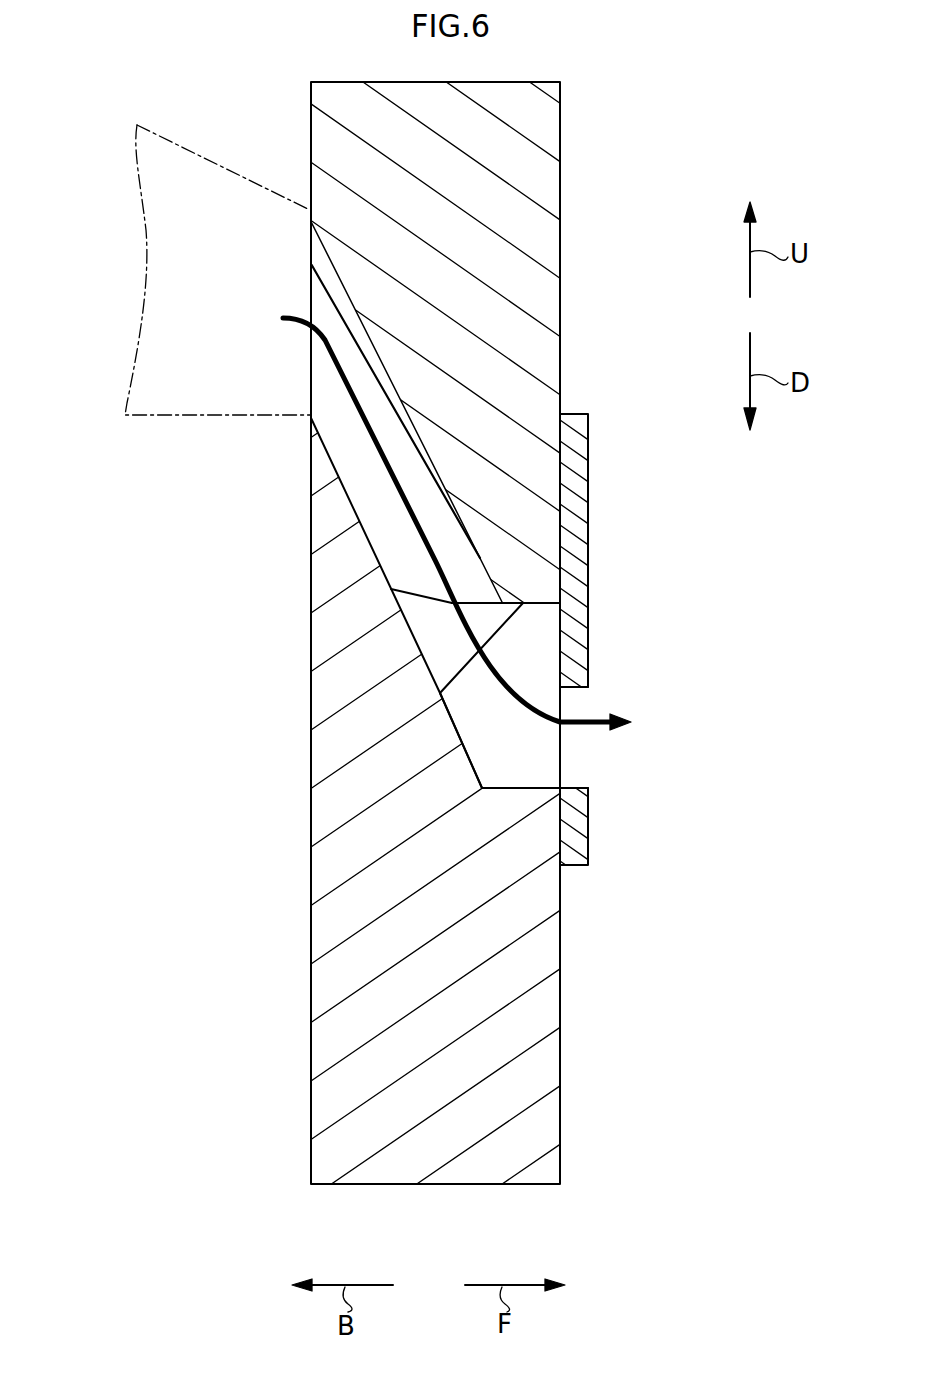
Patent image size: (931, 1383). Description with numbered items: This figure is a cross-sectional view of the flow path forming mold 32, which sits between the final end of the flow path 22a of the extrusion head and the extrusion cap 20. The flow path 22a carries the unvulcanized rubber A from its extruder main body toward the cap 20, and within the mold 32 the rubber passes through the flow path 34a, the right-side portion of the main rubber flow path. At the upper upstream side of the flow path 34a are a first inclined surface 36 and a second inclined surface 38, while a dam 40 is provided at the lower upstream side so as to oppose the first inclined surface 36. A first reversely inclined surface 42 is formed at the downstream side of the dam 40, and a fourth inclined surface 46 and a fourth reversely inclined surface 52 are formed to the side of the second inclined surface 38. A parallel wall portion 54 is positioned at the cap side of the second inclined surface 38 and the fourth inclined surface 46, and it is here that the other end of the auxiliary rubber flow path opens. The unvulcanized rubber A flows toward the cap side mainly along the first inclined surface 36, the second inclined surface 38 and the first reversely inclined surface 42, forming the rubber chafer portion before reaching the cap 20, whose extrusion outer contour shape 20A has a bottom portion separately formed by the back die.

The extrusion cap 20 is at (588, 677).
The extrusion outer contour shape 20A is at (572, 787).
The flow path 22a is at (135, 148).
The flow path forming mold 32 is at (352, 1185).
The flow path 34a is at (540, 763).
The first inclined surface 36 is at (312, 258).
The second inclined surface 38 is at (313, 302).
The dam 40 is at (310, 714).
The first reversely inclined surface 42 is at (478, 767).
The fourth inclined surface 46 is at (427, 598).
The fourth reversely inclined surface 52 is at (463, 670).
The parallel wall portion 54 is at (533, 604).
The unvulcanized rubber A is at (413, 507).